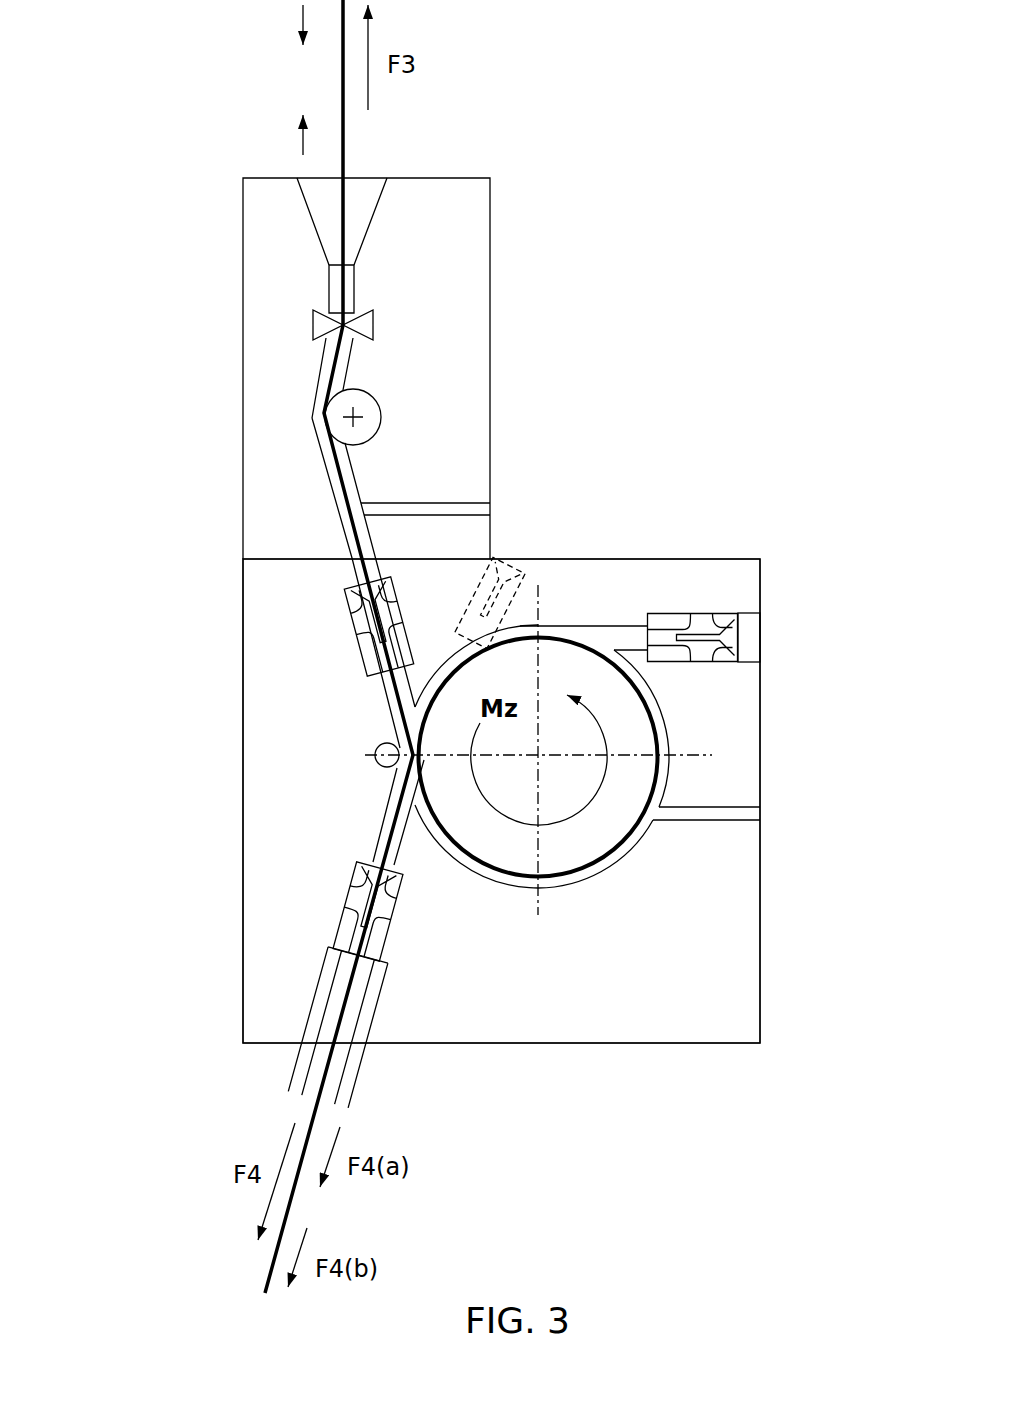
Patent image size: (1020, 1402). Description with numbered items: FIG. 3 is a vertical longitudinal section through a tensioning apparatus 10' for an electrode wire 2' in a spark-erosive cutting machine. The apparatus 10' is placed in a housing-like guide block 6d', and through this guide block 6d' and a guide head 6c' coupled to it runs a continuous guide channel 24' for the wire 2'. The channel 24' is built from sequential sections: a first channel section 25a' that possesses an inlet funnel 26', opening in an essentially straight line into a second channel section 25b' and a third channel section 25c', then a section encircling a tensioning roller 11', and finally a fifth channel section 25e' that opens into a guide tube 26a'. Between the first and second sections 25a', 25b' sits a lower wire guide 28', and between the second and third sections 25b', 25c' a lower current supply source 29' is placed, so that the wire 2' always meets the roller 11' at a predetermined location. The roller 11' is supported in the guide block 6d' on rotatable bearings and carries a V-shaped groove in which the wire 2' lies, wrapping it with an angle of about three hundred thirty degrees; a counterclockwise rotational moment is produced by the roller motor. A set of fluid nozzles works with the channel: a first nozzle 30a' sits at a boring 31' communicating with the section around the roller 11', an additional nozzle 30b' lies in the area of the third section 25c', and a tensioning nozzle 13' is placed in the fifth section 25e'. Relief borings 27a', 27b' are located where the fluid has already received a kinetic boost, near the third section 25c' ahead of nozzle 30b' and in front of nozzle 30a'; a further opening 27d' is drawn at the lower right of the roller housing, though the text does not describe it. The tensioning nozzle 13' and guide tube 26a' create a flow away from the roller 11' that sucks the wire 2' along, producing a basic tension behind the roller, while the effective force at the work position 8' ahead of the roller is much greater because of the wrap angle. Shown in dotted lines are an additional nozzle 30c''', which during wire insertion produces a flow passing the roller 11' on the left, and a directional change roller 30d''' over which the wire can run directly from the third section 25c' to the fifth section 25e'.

The electrode wire 2' is at (347, 646).
The work position 8' is at (306, 80).
The guide head 6c' is at (308, 368).
The inlet funnel 26' is at (415, 195).
The first channel section 25a' is at (270, 295).
The lower wire guide 28' is at (447, 305).
The second channel section 25b' is at (269, 388).
The lower current supply source 29' is at (453, 400).
The third channel section 25c' is at (300, 583).
The relief boring 27a' is at (466, 481).
The additional nozzle 30c''' is at (597, 555).
The additional nozzle 30b' is at (472, 599).
The boring 31' is at (617, 588).
The first nozzle 30a' is at (747, 636).
The directional change roller 30d''' is at (281, 711).
The guide channel 24' is at (631, 716).
The gas outlet 27d' is at (631, 870).
The tensioning roller 11' is at (538, 869).
The guide block 6d' is at (456, 801).
The tensioning apparatus 10' is at (416, 801).
The relief boring 27b' is at (750, 799).
The fifth channel section 25e' is at (303, 834).
The tensioning nozzle 13' is at (422, 976).
The guide tube 26a' is at (384, 1055).